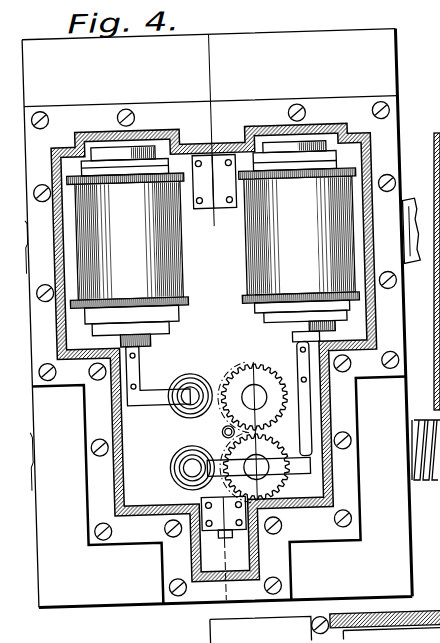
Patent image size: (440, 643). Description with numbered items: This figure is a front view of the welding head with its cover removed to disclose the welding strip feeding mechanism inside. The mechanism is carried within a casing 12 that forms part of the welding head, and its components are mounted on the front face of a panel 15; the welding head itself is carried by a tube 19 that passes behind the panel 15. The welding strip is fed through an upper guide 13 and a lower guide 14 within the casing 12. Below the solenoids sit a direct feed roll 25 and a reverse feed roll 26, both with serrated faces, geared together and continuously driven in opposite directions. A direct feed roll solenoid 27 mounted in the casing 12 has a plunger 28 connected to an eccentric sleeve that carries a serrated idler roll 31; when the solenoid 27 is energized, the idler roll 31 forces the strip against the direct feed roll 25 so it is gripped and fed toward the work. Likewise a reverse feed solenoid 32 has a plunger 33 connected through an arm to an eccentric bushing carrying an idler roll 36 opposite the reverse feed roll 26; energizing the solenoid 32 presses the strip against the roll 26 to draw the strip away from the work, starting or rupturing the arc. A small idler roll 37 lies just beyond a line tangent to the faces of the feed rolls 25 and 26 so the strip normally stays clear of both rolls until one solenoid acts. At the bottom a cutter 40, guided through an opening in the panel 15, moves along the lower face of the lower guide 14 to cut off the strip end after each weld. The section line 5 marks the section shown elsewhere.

The section line 5- 5 is at (217, 314).
The casing 12 is at (238, 152).
The upper guide 13 is at (217, 208).
The lower guide 14 is at (191, 527).
The panel 15 is at (395, 68).
The tube 19 is at (412, 268).
The direct feed roll 25 is at (246, 383).
The reverse feed roll 26 is at (274, 442).
The direct feed roll solenoid 27 is at (158, 263).
The plunger 28 is at (146, 341).
The idler roll 31 is at (195, 371).
The reverse feed solenoid 32 is at (265, 267).
The plunger 33 is at (270, 337).
The idler roll 36 is at (167, 468).
The small idler roll 37 is at (219, 432).
The cutter 40 is at (227, 532).